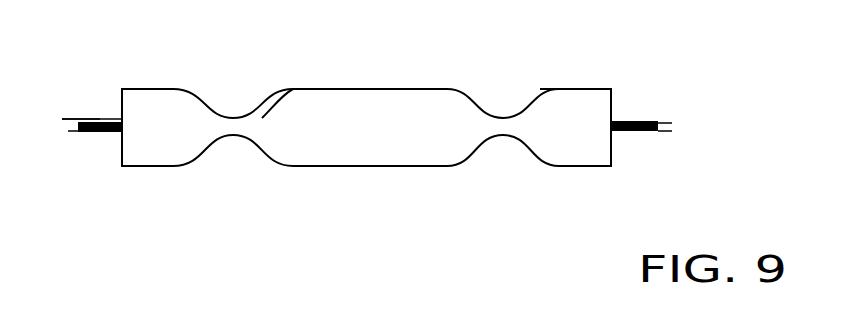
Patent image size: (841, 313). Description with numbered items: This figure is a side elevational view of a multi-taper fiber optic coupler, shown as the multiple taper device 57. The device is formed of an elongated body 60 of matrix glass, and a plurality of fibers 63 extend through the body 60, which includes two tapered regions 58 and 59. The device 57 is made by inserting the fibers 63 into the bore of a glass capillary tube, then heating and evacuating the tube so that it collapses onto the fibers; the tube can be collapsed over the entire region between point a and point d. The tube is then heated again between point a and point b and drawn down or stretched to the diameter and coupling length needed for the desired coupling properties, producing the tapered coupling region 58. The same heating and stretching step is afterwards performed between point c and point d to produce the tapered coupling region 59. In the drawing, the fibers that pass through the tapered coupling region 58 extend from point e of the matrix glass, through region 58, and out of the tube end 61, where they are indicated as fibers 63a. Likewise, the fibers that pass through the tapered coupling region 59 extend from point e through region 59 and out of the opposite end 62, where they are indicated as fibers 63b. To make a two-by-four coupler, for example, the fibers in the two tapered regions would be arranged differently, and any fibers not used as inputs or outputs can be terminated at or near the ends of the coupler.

The multiple taper device 57 is at (340, 167).
The tapered coupling region 58 is at (233, 137).
The tapered coupling region 59 is at (502, 137).
The elongated body 60 is at (155, 147).
The tube end 61 is at (120, 156).
The end 62 is at (612, 150).
The fibers 63 is at (83, 135).
The fibers 63a is at (77, 119).
The fibers 63b is at (632, 117).
The point a is at (148, 89).
The point b is at (280, 93).
The point c is at (433, 89).
The point d is at (558, 89).
The point e is at (362, 89).